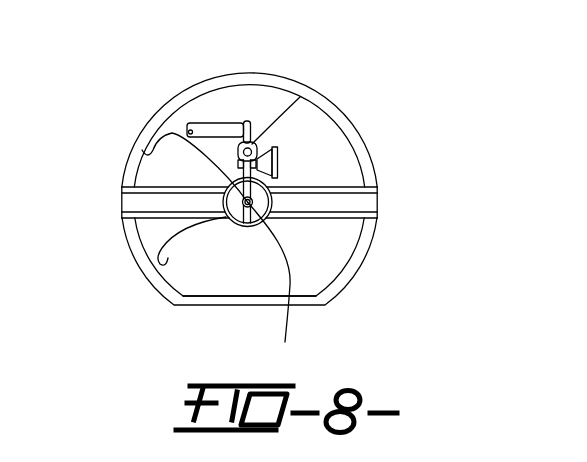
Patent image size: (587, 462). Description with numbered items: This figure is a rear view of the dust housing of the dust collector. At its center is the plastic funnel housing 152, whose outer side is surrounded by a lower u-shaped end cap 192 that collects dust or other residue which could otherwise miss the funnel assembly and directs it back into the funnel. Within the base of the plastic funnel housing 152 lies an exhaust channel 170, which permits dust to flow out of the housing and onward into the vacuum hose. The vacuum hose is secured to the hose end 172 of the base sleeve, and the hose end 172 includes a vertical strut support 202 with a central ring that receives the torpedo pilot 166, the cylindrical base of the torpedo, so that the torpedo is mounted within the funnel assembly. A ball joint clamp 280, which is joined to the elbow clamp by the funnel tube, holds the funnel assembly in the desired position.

The plastic funnel housing 152 is at (318, 247).
The torpedo pilot 166 is at (142, 150).
The exhaust channel 170 is at (376, 186).
The hose end 172 is at (163, 264).
The lower u-shaped end cap 192 is at (342, 277).
The vertical strut support 202 is at (278, 289).
The ball joint clamp 280 is at (300, 98).